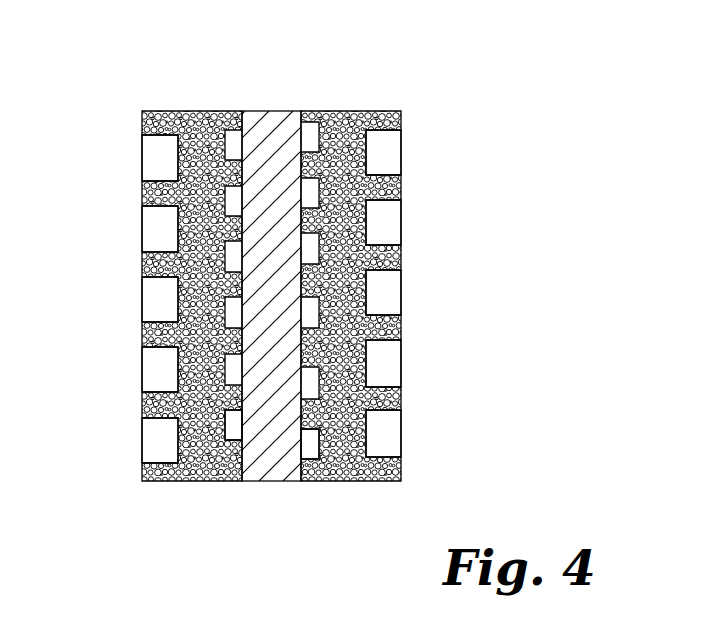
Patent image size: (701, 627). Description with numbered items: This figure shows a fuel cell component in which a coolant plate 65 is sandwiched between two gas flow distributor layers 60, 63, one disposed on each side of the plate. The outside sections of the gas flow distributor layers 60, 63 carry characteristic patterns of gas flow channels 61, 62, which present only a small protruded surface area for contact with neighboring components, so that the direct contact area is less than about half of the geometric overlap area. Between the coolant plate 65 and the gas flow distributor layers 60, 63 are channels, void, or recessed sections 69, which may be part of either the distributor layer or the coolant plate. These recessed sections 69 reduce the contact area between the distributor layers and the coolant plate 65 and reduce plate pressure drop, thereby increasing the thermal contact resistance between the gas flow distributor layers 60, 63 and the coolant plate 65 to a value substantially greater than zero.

The gas flow distributor layer 60 is at (196, 110).
The gas flow channels 61 is at (153, 222).
The gas flow channels 62 is at (387, 232).
The gas flow distributor layer 63 is at (339, 110).
The coolant plate 65 is at (268, 110).
The channels, void, or recessed sections 69 is at (313, 443).